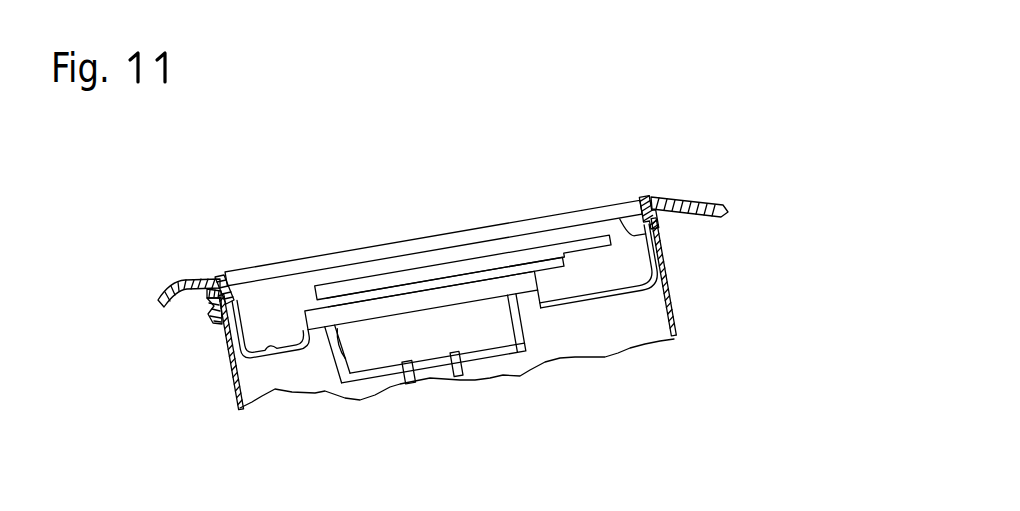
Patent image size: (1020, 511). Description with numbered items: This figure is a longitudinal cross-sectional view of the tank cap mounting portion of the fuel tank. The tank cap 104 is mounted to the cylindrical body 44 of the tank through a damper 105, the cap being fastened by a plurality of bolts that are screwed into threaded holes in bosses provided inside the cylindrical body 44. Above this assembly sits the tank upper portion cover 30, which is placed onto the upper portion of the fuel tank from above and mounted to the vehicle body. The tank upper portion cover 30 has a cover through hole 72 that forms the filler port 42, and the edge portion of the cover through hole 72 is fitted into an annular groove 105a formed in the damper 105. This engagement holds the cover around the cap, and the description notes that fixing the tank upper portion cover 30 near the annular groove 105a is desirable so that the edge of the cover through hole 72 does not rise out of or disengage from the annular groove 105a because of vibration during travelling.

The tank cap 104 is at (433, 236).
The cover through hole 72 is at (641, 205).
The tank upper portion cover 30 is at (185, 279).
The cylindrical body 44 is at (232, 381).
The filler port 42 is at (236, 280).
The damper 105 is at (188, 281).
The annular groove 105a is at (213, 288).